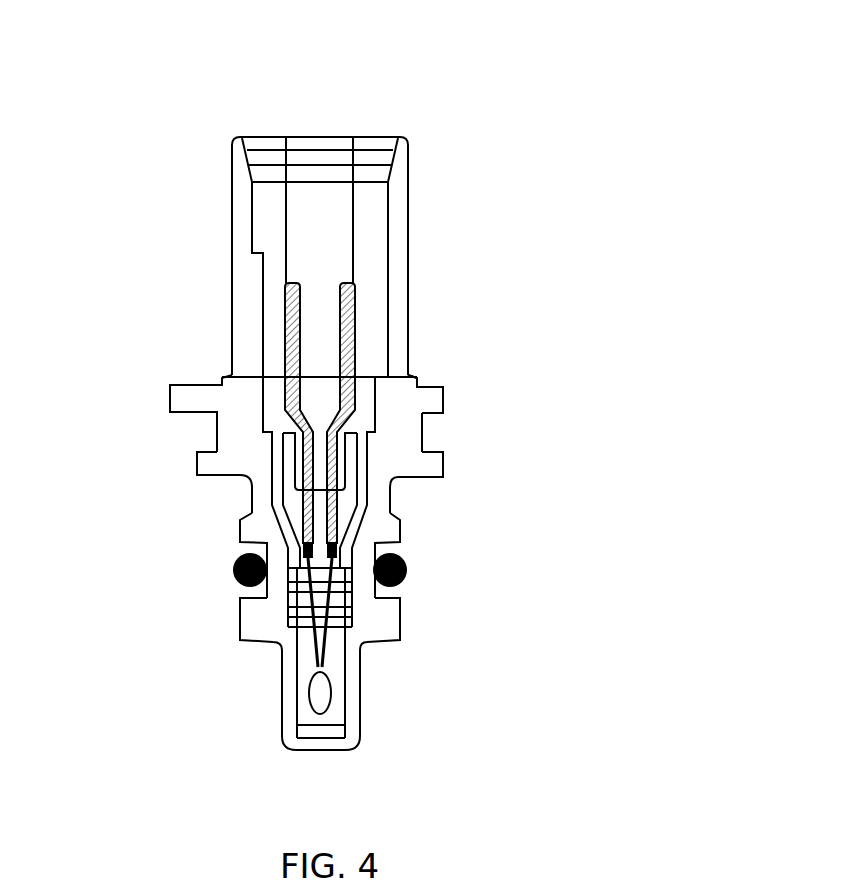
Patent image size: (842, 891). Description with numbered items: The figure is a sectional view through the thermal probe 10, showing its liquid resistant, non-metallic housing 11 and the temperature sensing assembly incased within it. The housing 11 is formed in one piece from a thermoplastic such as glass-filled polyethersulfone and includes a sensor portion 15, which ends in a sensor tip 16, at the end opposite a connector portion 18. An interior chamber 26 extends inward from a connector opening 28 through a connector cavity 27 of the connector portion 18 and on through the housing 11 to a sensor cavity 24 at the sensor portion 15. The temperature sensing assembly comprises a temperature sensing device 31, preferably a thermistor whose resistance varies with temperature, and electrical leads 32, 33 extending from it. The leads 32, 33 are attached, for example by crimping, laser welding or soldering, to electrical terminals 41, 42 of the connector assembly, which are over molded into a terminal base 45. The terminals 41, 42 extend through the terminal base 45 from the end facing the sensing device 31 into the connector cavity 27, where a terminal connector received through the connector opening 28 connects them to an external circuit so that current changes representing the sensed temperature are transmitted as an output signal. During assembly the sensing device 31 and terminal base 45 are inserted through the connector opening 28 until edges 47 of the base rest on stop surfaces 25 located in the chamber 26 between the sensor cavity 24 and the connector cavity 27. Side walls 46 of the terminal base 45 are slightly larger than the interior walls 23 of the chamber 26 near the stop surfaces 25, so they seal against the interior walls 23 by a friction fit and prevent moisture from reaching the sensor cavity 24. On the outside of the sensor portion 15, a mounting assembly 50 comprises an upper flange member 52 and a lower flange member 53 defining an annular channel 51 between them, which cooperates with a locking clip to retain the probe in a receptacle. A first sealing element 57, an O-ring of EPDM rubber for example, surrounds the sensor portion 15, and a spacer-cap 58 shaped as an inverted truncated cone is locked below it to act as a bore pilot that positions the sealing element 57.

The thermal probe 10 is at (449, 47).
The housing 11 is at (233, 218).
The sensor portion 15 is at (205, 517).
The sensor tip 16 is at (358, 725).
The connector portion 18 is at (210, 231).
The interior walls 23 is at (380, 414).
The sensor cavity 24 is at (305, 672).
The stop surfaces 25 is at (424, 427).
The interior chamber 26 is at (332, 229).
The connector cavity 27 is at (310, 337).
The connector opening 28 is at (294, 137).
The temperature sensing device 31 is at (322, 694).
The electrical lead 32 is at (312, 648).
The electrical lead 33 is at (330, 643).
The electrical terminal 41 is at (290, 333).
The electrical terminal 42 is at (352, 322).
The terminal base 45 is at (388, 395).
The side walls 46 is at (263, 403).
The edges 47 is at (263, 435).
The mounting assembly 50 is at (497, 383).
The annular channel 51 is at (424, 435).
The upper flange member 52 is at (444, 387).
The lower flange member 53 is at (440, 467).
The first sealing element 57 is at (408, 563).
The spacer-cap 58 is at (255, 627).